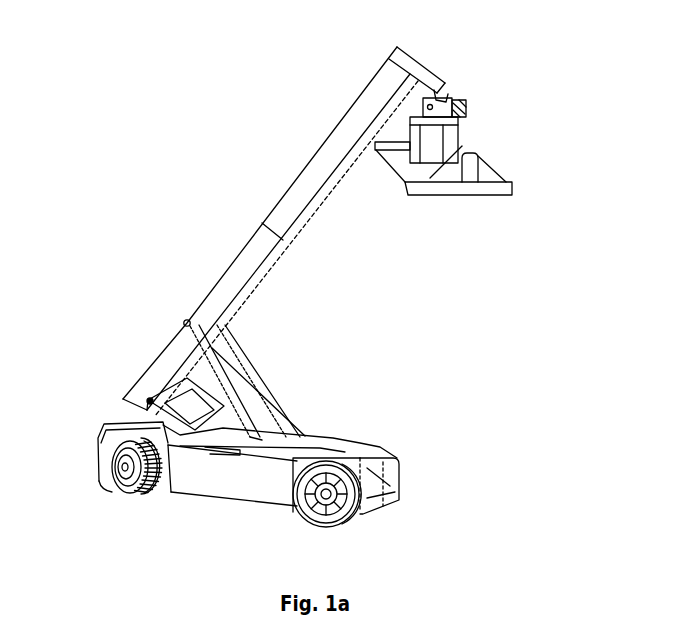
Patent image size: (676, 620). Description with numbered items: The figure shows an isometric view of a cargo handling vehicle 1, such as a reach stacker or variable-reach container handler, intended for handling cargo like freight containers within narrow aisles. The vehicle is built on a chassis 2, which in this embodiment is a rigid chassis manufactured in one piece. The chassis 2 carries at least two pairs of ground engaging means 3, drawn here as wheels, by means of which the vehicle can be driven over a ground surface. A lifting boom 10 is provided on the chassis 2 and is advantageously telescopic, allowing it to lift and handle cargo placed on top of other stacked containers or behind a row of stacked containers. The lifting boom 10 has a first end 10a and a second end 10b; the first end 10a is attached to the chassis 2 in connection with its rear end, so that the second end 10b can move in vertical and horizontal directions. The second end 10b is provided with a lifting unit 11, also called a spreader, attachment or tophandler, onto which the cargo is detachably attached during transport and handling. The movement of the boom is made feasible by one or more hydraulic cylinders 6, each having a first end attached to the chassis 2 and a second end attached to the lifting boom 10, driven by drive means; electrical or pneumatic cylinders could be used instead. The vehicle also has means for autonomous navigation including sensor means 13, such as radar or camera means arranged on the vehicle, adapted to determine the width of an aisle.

The cargo handling vehicle 1 is at (170, 197).
The chassis 2 is at (230, 465).
The ground engaging means 3 is at (140, 497).
The hydraulic cylinder 6 is at (287, 385).
The lifting boom 10 is at (320, 160).
The first end 10a is at (152, 378).
The second end 10b is at (414, 87).
The lifting unit 11 is at (443, 192).
The sensor means 13 is at (103, 468).